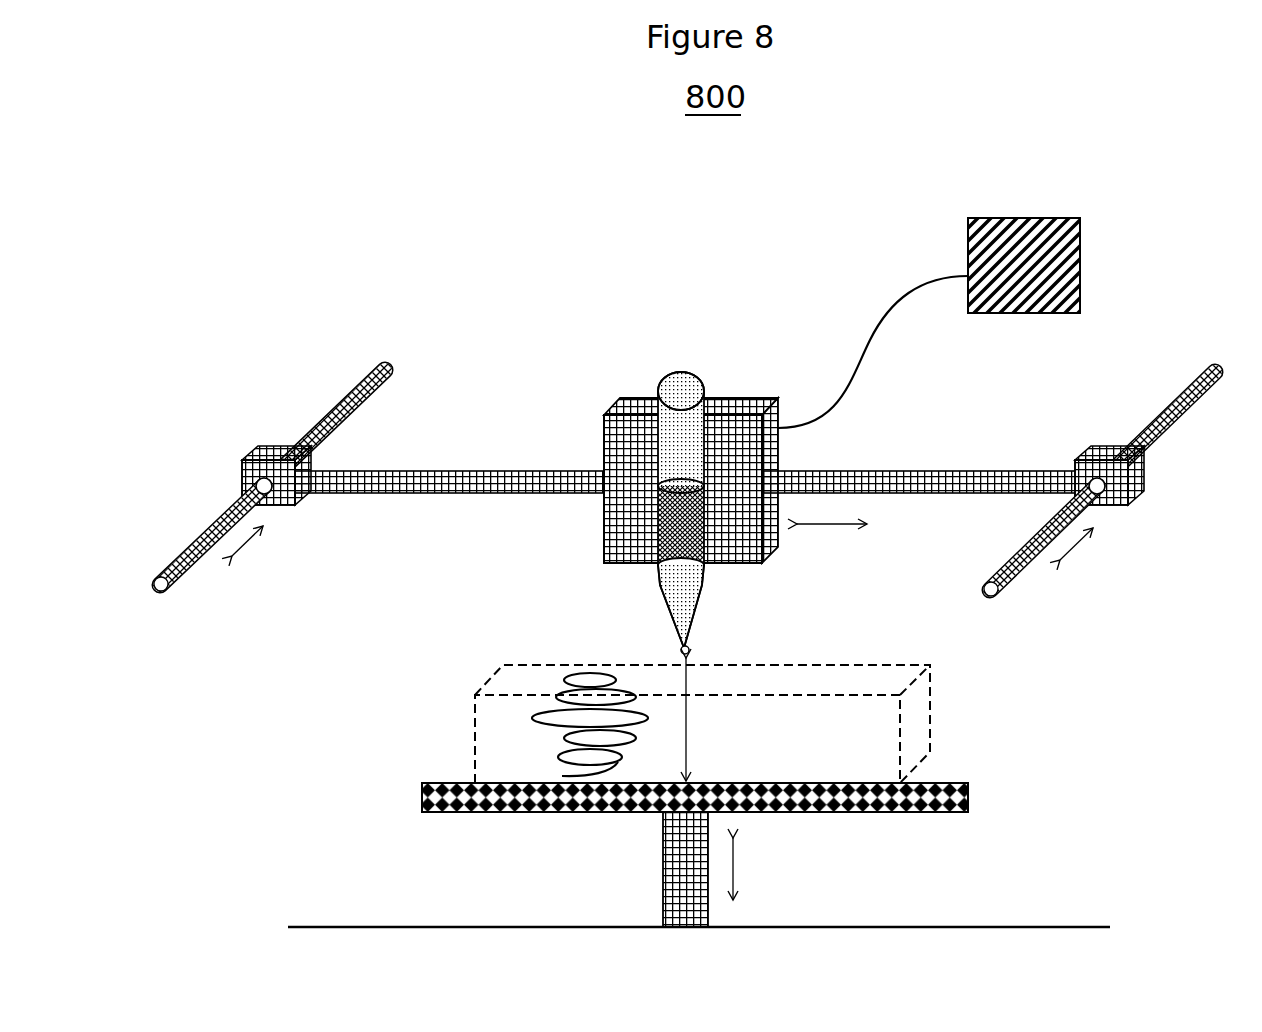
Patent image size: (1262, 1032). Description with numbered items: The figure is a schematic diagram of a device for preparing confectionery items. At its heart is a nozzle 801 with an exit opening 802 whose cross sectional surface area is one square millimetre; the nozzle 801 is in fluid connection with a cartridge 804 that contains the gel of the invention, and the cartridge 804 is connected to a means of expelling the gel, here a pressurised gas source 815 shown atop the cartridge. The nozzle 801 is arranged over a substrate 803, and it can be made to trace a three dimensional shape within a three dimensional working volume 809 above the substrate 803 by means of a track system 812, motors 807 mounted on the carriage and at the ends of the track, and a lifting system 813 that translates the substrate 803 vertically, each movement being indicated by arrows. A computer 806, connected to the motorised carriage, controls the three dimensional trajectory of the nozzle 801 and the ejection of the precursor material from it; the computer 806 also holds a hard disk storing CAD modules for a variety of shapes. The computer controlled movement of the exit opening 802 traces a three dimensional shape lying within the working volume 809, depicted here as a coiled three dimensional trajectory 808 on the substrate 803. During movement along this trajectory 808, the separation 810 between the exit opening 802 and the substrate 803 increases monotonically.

The nozzle 801 is at (705, 598).
The exit opening 802 is at (689, 652).
The substrate 803 is at (968, 785).
The cartridge 804 is at (655, 513).
The computer 806 is at (1080, 238).
The motor 807 is at (735, 400).
The 3 dimensional trajectory 808 is at (535, 723).
The 3 dimensional working volume 809 is at (932, 712).
The separation between exit opening and substrate 810 is at (690, 757).
The track system 812 is at (358, 380).
The lifting system 813 is at (662, 853).
The pressurised gas source 815 is at (680, 372).